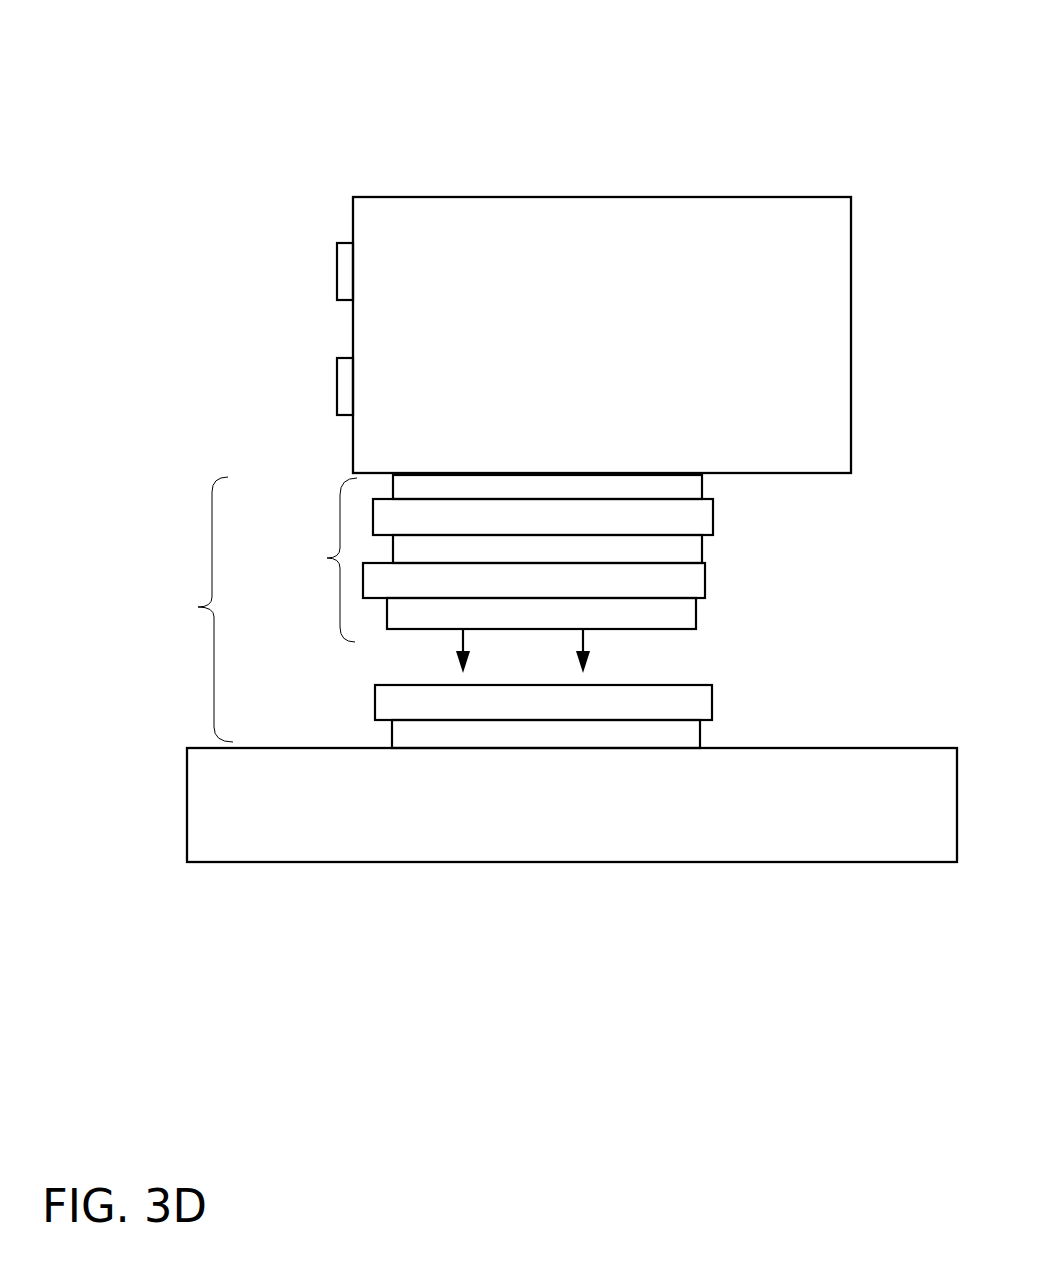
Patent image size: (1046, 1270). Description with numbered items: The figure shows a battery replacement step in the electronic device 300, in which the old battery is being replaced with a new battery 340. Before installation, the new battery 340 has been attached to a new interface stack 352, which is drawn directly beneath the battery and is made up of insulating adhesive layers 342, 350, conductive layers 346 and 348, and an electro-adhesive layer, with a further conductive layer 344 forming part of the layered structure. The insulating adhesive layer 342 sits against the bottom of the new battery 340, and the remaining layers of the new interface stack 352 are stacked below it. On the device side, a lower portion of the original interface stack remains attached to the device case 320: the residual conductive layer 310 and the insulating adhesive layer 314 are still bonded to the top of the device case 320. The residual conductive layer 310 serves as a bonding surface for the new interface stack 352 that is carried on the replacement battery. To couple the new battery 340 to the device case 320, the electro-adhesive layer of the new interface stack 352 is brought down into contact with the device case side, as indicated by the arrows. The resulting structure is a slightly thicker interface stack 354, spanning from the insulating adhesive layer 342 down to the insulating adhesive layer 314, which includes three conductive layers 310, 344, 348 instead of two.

The electronic device 300 is at (192, 96).
The new battery 340 is at (623, 384).
The insulating adhesive layer 342 is at (702, 483).
The conductive layer 344 is at (713, 520).
The conductive layer 346 is at (702, 552).
The conductive layer 348 is at (705, 582).
The insulating adhesive layer 350 is at (696, 616).
The new interface stack 352 is at (323, 558).
The interface stack 354 is at (198, 607).
The conductive layer 310 is at (712, 703).
The insulating adhesive layer 314 is at (700, 735).
The device case 320 is at (237, 812).